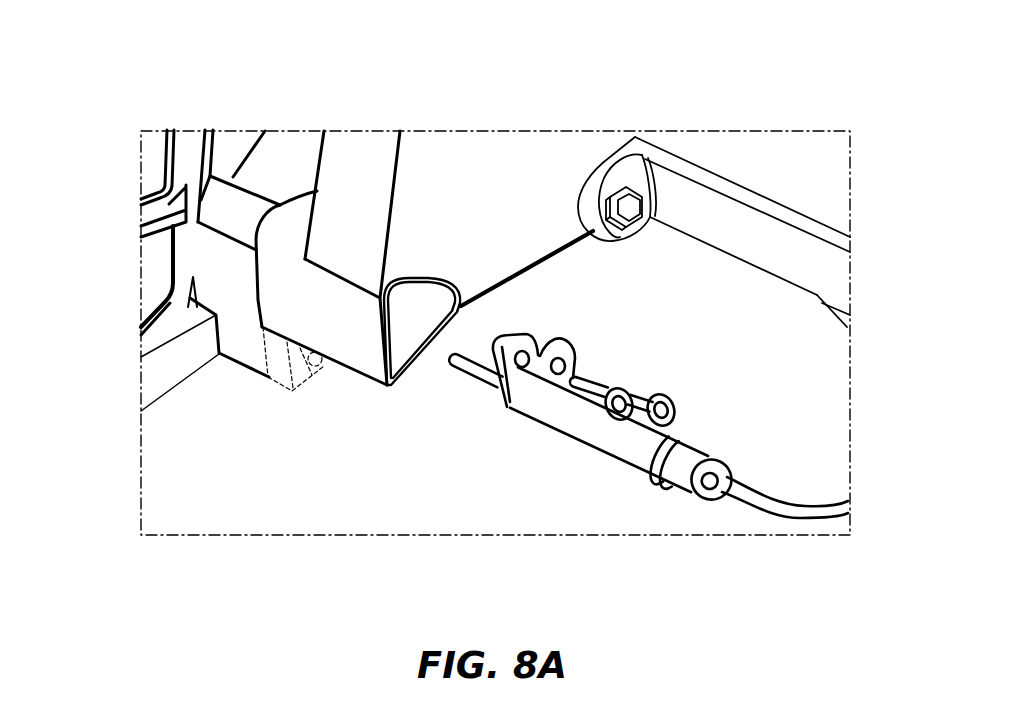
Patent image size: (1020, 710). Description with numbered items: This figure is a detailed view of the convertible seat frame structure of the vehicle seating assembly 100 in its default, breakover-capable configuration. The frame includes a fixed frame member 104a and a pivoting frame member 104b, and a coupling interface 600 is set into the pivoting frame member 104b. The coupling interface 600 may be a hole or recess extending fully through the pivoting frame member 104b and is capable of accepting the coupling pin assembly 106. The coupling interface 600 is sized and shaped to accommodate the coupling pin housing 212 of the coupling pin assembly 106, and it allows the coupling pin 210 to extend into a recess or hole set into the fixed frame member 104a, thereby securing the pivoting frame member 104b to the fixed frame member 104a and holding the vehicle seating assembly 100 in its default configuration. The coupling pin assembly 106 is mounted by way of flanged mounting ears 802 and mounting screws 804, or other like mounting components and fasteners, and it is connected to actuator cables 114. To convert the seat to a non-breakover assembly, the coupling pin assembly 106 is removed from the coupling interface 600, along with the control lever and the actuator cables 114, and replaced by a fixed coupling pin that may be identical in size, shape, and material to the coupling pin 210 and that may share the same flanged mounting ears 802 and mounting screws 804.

The vehicle seating assembly 100 is at (216, 76).
The fixed frame member 104a is at (325, 322).
The pivoting frame member 104b is at (216, 269).
The coupling pin assembly 106 is at (636, 347).
The coupling interface 600 is at (410, 337).
The coupling pin 210 is at (478, 370).
The flanged mounting ears 802 is at (507, 403).
The coupling pin housing 212 is at (553, 400).
The mounting screws 804 is at (586, 393).
The actuator cables 114 is at (768, 502).